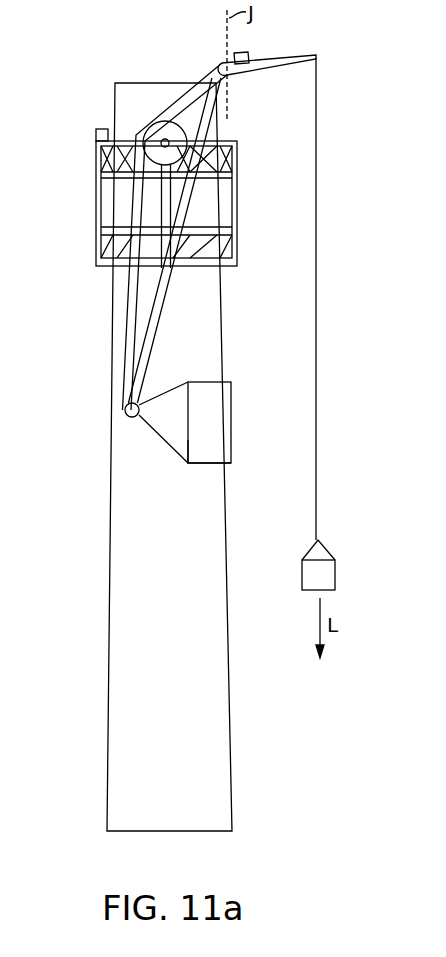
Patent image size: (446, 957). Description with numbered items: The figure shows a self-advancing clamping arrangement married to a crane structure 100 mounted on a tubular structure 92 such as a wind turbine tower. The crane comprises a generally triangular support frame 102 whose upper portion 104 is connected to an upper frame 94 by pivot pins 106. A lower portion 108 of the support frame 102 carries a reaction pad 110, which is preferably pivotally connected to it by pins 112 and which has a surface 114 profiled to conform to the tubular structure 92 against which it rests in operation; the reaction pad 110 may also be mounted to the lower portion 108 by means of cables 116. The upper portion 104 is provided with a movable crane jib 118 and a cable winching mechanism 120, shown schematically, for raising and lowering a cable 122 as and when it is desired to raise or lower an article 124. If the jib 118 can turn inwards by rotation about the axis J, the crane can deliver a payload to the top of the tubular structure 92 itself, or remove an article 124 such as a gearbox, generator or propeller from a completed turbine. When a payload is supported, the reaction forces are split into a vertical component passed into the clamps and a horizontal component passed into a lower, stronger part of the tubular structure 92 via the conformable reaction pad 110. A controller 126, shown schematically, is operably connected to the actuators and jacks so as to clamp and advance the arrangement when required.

The tubular structure 92 is at (142, 95).
The crane structure 100 is at (171, 92).
The upper frame 94 is at (98, 176).
The support frame 102 is at (182, 213).
The upper portion 104 is at (196, 110).
The pivot pins 106 is at (160, 142).
The lower portion 108 is at (137, 318).
The reaction pad 110 is at (215, 404).
The pins 112 is at (125, 414).
The surface 114 is at (210, 450).
The cables 116 is at (163, 435).
The crane jib 118 is at (278, 67).
The cable winching mechanism 120 is at (250, 55).
The cable 122 is at (316, 289).
The article 124 is at (328, 571).
The controller 126 is at (96, 135).